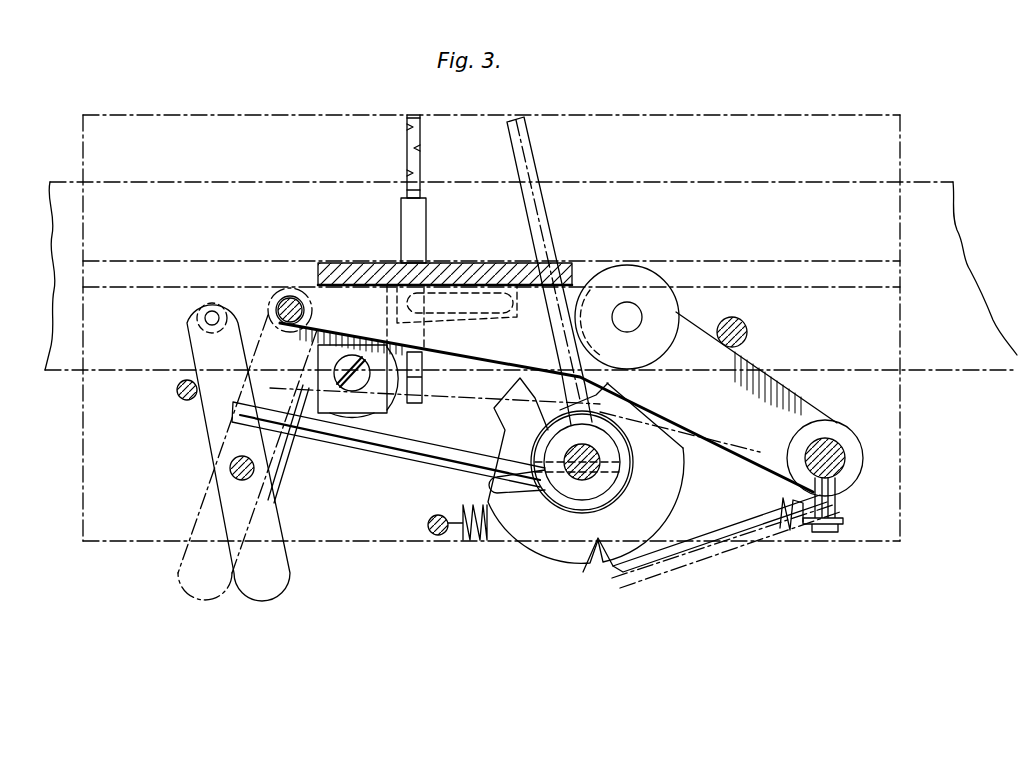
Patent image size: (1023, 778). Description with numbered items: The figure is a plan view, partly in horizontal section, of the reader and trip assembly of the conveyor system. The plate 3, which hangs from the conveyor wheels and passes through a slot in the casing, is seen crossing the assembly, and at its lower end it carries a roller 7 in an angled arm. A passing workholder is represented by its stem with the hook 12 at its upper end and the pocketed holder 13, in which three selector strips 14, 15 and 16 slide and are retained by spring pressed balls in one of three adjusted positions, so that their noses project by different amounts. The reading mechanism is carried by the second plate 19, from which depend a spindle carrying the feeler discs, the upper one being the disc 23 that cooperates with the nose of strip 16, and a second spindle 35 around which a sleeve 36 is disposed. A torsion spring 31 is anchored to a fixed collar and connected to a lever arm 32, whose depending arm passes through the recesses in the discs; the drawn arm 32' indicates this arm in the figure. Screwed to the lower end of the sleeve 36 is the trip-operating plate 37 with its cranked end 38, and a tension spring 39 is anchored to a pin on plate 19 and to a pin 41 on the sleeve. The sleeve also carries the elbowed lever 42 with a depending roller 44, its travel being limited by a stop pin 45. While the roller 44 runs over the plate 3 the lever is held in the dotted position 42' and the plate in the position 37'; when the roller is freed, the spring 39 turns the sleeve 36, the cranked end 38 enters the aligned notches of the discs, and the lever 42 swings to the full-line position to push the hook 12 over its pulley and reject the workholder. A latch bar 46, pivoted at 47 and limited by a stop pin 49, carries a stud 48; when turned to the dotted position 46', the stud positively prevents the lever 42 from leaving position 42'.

The plate 3 is at (442, 274).
The roller 7 is at (298, 437).
The hook 12 is at (486, 287).
The pocketed holder 13 is at (401, 218).
The selector strip 14 is at (407, 129).
The selector strip 15 is at (418, 146).
The selector strip 16 is at (420, 188).
The second plate 19 is at (892, 487).
The feeler disc 23 is at (665, 492).
The torsion spring 31 is at (613, 508).
The lever arm 32 is at (388, 444).
The arm 32' is at (549, 271).
The second spindle 35 is at (827, 440).
The sleeve 36 is at (857, 446).
The plate 37 is at (720, 545).
The plate position 37' is at (726, 550).
The cranked end 38 is at (610, 553).
The tension spring 39 is at (483, 540).
The pin 41 is at (836, 507).
The lever 42 is at (558, 402).
The lever position 42' is at (680, 451).
The roller 44 is at (632, 283).
The stop pin 45 is at (740, 325).
The latch bar 46 is at (238, 452).
The latch bar position 46' is at (232, 444).
The pivot 47 is at (230, 468).
The stud 48 is at (270, 318).
The stop pin 49 is at (177, 392).